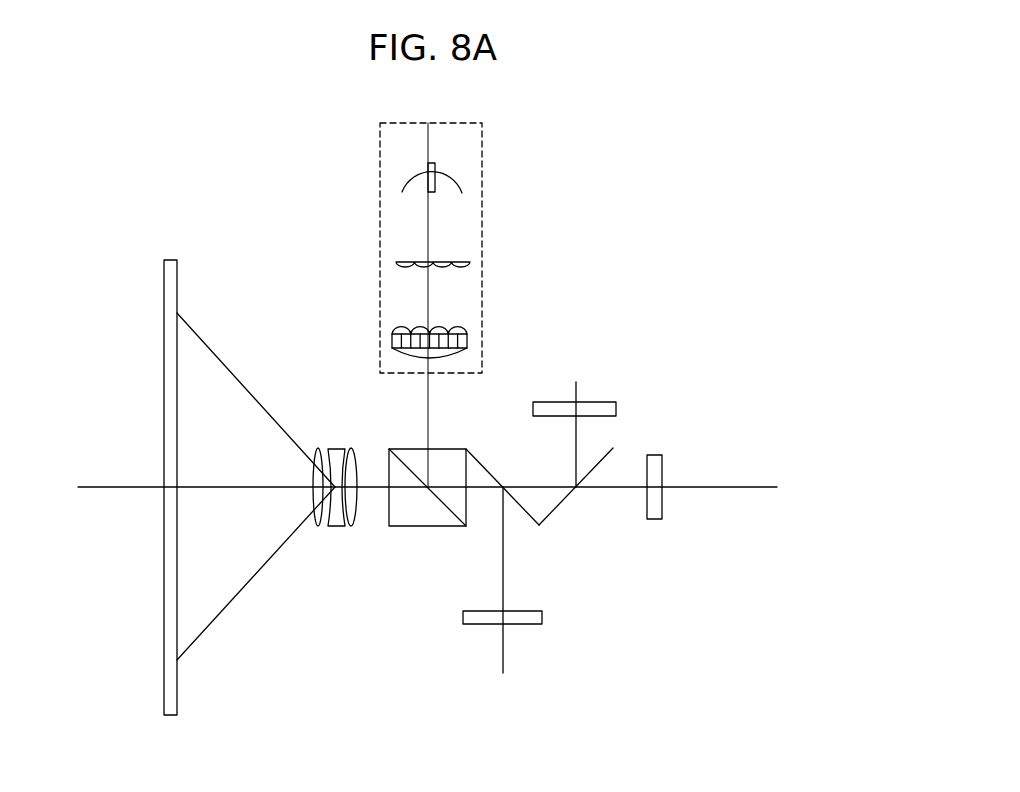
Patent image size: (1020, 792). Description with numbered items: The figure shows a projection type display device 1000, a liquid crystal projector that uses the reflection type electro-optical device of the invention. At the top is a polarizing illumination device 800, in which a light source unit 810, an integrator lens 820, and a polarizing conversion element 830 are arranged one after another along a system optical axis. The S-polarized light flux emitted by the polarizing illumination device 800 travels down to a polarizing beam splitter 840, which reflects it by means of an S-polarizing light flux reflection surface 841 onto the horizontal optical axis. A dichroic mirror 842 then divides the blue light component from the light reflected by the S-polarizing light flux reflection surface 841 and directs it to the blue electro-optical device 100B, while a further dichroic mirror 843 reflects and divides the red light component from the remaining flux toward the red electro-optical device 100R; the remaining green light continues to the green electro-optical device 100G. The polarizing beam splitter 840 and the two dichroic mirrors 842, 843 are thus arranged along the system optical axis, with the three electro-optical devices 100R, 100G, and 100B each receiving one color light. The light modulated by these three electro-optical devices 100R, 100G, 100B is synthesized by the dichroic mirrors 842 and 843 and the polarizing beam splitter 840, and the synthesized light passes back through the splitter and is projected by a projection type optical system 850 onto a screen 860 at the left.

The polarizing illumination device 800 is at (475, 153).
The light source unit 810 is at (457, 180).
The integrator lens 820 is at (460, 259).
The polarizing conversion element 830 is at (467, 340).
The polarizing beam splitter 840 is at (400, 515).
The S-polarizing light flux reflection surface 841 is at (447, 518).
The dichroic mirror 842 is at (530, 522).
The dichroic mirror 843 is at (567, 502).
The projection type optical system 850 is at (360, 438).
The screen 860 is at (173, 686).
The electro-optical device 100R is at (615, 402).
The electro-optical device 100G is at (662, 505).
The electro-optical device 100B is at (480, 624).
The projection type display device 1000 is at (714, 446).